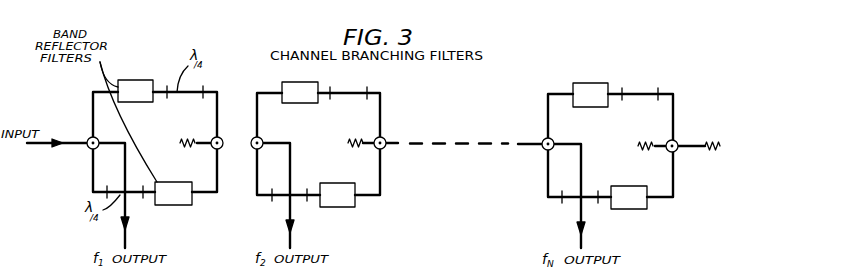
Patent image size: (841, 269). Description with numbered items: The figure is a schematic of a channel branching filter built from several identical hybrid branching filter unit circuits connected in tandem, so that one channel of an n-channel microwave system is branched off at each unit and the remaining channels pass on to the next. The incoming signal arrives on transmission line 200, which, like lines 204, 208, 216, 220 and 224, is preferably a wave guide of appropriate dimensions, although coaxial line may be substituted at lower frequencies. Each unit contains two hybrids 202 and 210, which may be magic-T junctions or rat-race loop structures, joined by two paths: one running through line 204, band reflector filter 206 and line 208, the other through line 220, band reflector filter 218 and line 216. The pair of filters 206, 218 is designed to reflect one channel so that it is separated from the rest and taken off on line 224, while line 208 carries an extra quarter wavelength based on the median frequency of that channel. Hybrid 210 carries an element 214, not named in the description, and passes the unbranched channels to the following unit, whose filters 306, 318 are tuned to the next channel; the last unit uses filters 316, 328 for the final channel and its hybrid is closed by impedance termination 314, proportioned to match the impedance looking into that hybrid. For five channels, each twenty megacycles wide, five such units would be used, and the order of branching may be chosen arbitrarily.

The transmission line 200 is at (80, 141).
The hybrid 202 is at (88, 148).
The transmission line 204 is at (93, 92).
The band reflecting filter 206 is at (128, 80).
The transmission line 208 is at (220, 92).
The hybrid 210 is at (220, 134).
The matched termination 214 is at (190, 139).
The transmission line 216 is at (200, 195).
The band reflecting filter 218 is at (163, 205).
The transmission line 220 is at (93, 192).
The transmission line 224 is at (123, 240).
The band reflecting filter 306 is at (308, 82).
The impedance termination 314 is at (713, 142).
The band reflecting filter 316 is at (588, 83).
The band reflecting filter 318 is at (340, 207).
The band reflecting filter 328 is at (632, 210).